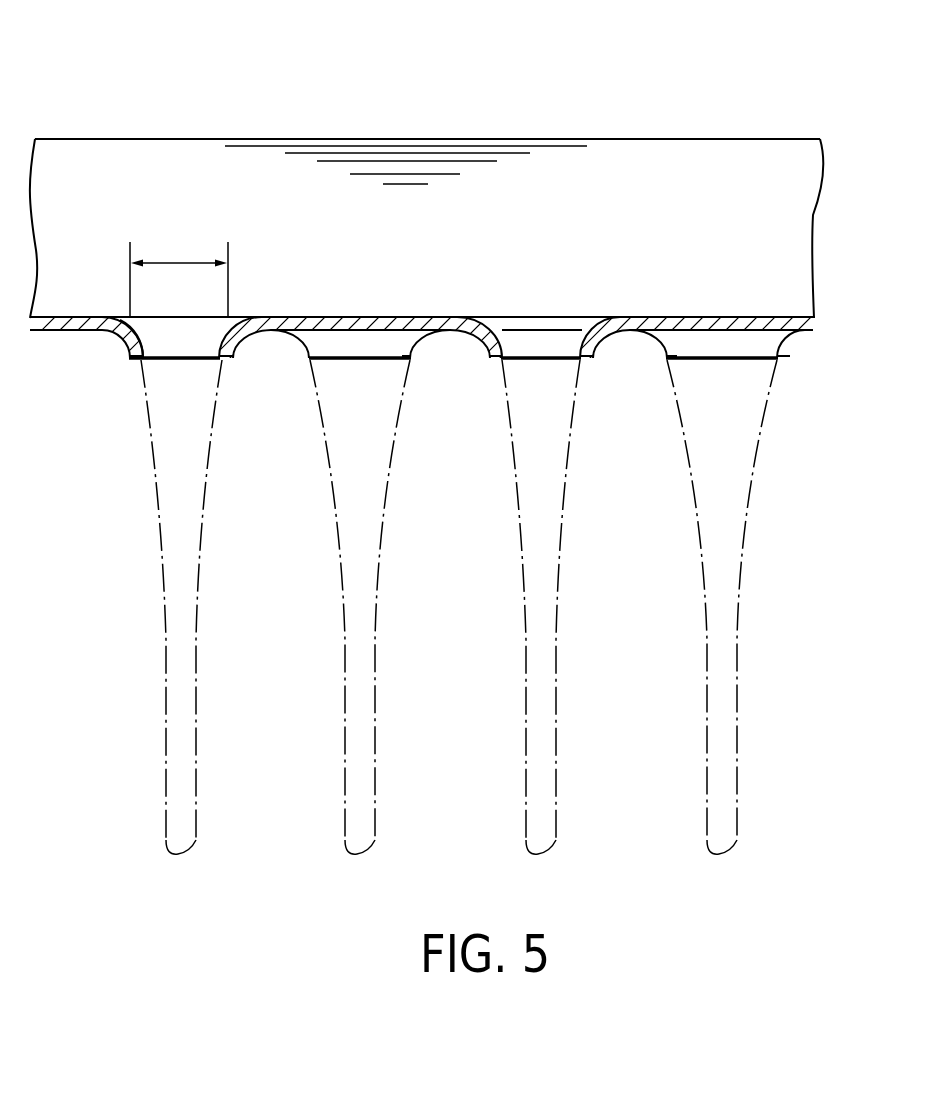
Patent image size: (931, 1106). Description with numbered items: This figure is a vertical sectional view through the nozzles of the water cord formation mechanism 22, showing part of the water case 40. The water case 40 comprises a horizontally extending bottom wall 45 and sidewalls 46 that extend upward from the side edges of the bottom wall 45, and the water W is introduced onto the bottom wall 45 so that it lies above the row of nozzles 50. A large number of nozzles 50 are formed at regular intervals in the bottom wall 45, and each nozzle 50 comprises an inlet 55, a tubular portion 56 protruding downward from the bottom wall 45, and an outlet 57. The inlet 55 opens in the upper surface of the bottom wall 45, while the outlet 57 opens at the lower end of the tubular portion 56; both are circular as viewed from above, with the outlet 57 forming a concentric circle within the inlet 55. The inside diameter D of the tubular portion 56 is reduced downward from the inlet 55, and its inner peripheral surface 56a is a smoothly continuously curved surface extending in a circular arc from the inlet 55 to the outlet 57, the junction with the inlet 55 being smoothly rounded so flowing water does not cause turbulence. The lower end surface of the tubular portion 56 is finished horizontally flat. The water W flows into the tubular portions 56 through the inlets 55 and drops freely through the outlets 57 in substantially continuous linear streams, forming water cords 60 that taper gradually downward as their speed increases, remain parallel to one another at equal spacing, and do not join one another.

The water cord formation mechanism 22 is at (593, 77).
The water case 40 is at (742, 139).
The sidewall 46 is at (793, 191).
The water W is at (449, 165).
The bottom wall 45 is at (377, 316).
The inlet 55 is at (117, 316).
The tubular portion 56 is at (122, 343).
The inner peripheral surface 56a is at (137, 338).
The outlet 57 is at (157, 360).
The nozzle 50 is at (223, 360).
The water cord 60 is at (197, 640).
The inside diameter D is at (174, 262).